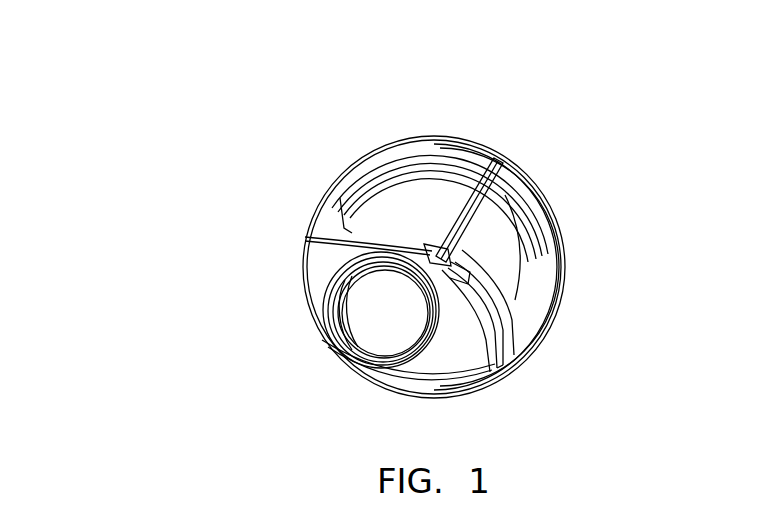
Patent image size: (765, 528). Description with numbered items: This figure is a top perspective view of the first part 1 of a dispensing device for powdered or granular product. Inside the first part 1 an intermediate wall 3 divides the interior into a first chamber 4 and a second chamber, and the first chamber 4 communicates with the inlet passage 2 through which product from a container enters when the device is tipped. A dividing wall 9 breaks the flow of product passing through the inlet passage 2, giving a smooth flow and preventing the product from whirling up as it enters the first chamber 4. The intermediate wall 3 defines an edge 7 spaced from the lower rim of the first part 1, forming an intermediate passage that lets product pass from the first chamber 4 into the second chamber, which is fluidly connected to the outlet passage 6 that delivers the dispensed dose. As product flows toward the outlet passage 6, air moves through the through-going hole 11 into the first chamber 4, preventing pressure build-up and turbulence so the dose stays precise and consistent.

The first part 1 is at (118, 110).
The inlet passage 2 is at (413, 160).
The intermediate wall 3 is at (493, 333).
The first chamber 4 is at (517, 273).
The outlet passage 6 is at (387, 308).
The edge 7 is at (492, 312).
The dividing wall 9 is at (487, 210).
The through-going hole 11 is at (437, 257).